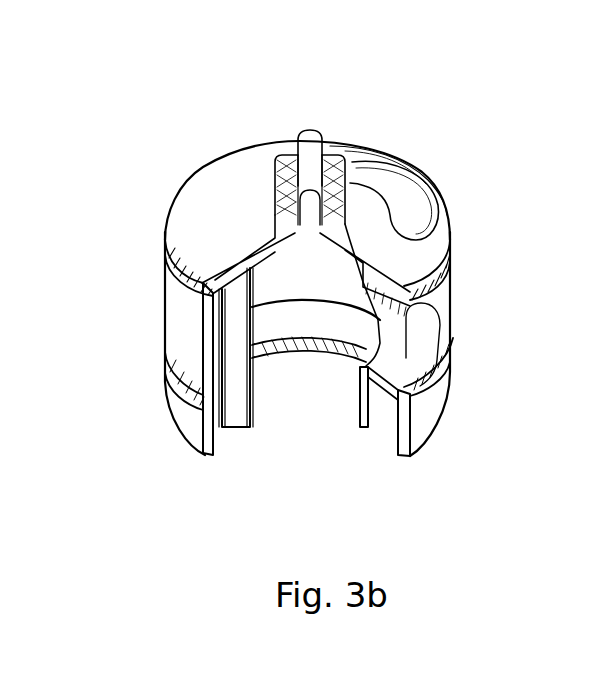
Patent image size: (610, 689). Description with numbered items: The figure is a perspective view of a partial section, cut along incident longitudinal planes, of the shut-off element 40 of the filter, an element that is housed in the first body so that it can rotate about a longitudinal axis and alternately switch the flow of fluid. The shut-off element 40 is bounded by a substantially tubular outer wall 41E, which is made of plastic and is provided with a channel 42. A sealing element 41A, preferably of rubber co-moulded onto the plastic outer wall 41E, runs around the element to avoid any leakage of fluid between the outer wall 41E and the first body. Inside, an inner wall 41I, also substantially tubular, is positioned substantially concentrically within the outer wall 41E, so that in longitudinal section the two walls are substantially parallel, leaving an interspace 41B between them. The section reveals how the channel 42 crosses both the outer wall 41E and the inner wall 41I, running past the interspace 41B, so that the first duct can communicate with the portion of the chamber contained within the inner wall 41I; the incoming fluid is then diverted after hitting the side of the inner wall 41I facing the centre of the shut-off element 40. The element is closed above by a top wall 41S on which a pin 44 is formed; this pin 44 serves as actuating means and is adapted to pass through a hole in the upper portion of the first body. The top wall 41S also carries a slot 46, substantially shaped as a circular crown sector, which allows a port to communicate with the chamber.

The shut-off element 40 is at (148, 83).
The top wall 41S is at (210, 237).
The sealing element 41A is at (433, 294).
The outer wall 41E is at (185, 412).
The inner wall 41I is at (357, 413).
The interspace 41B is at (220, 413).
The channel 42 is at (407, 330).
The pin 44 is at (275, 190).
The slot 46 is at (395, 200).